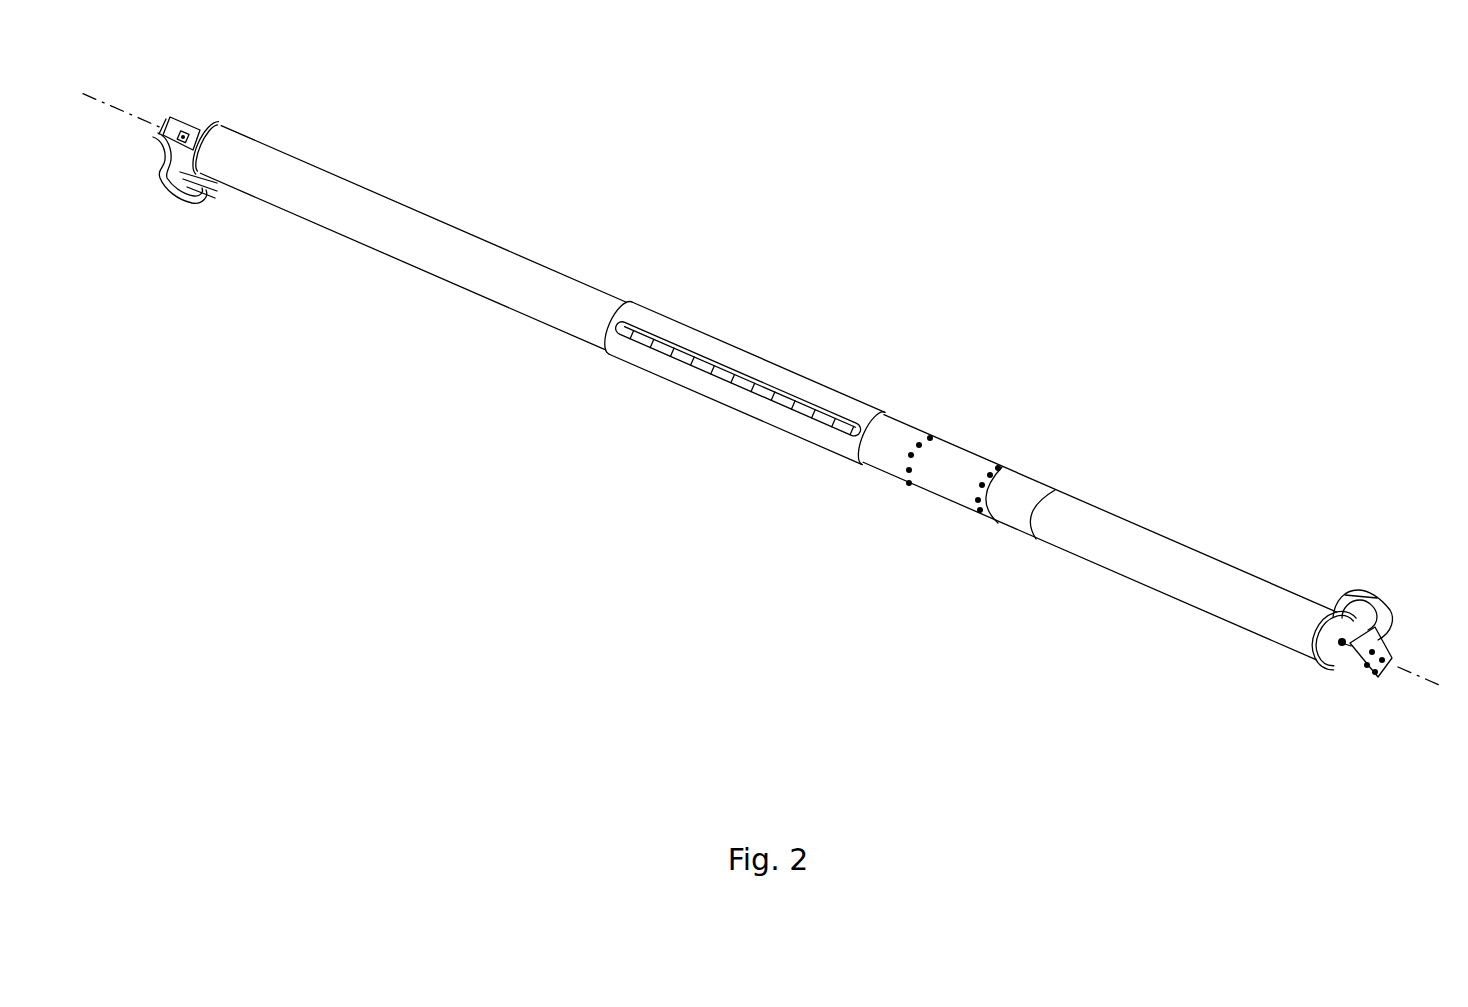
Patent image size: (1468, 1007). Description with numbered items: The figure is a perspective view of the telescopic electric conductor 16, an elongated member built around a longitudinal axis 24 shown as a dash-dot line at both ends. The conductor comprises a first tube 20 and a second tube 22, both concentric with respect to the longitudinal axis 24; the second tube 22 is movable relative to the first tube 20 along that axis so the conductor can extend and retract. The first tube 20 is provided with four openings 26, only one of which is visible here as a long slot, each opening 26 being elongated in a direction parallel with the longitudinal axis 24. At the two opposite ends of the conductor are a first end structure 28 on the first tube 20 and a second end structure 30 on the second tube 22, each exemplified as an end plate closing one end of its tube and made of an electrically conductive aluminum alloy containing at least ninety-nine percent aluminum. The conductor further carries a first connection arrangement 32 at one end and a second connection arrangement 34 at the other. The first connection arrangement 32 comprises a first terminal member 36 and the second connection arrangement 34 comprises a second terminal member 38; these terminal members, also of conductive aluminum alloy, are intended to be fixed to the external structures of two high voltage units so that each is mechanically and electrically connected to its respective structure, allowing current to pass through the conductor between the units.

The telescopic electric conductor 16 is at (640, 163).
The first tube 20 is at (383, 218).
The second tube 22 is at (1185, 575).
The longitudinal axis 24 is at (1442, 684).
The opening 26 is at (733, 378).
The first end structure 28 is at (203, 129).
The second end structure 30 is at (1318, 667).
The first connection arrangement 32 is at (187, 90).
The second connection arrangement 34 is at (1337, 697).
The first terminal member 36 is at (153, 143).
The second terminal member 38 is at (1393, 651).